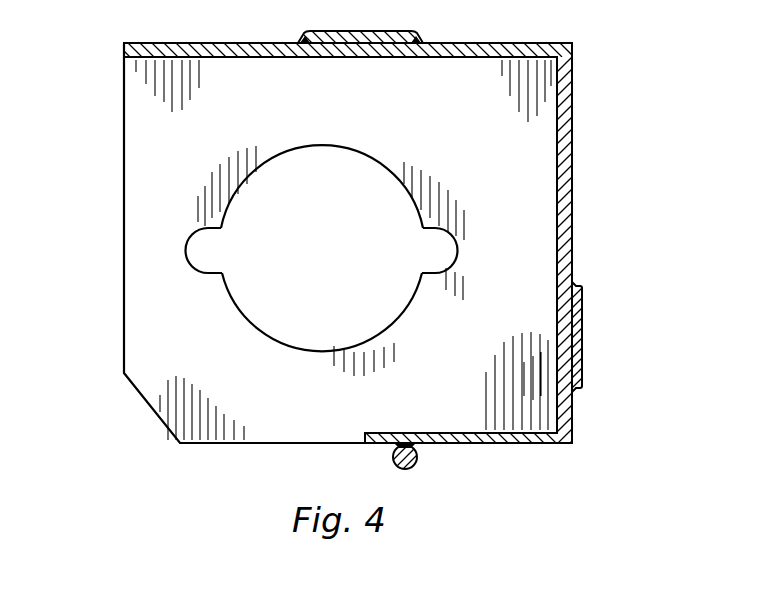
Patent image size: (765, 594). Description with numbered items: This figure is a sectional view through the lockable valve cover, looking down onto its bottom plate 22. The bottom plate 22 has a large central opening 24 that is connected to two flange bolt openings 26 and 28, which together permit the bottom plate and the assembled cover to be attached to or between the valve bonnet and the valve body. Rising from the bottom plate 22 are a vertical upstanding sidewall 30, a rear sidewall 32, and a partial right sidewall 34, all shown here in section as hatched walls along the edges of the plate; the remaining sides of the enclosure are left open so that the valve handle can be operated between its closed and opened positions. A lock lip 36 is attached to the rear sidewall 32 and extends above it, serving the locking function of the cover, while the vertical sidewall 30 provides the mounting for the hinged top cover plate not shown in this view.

The bottom plate 22 is at (188, 157).
The opening 24 is at (248, 318).
The flange bolt opening 26 is at (192, 254).
The flange bolt opening 28 is at (452, 251).
The vertical upstanding sidewall 30 is at (475, 42).
The rear sidewall 32 is at (572, 167).
The partial right sidewall 34 is at (450, 430).
The lock lip 36 is at (577, 332).